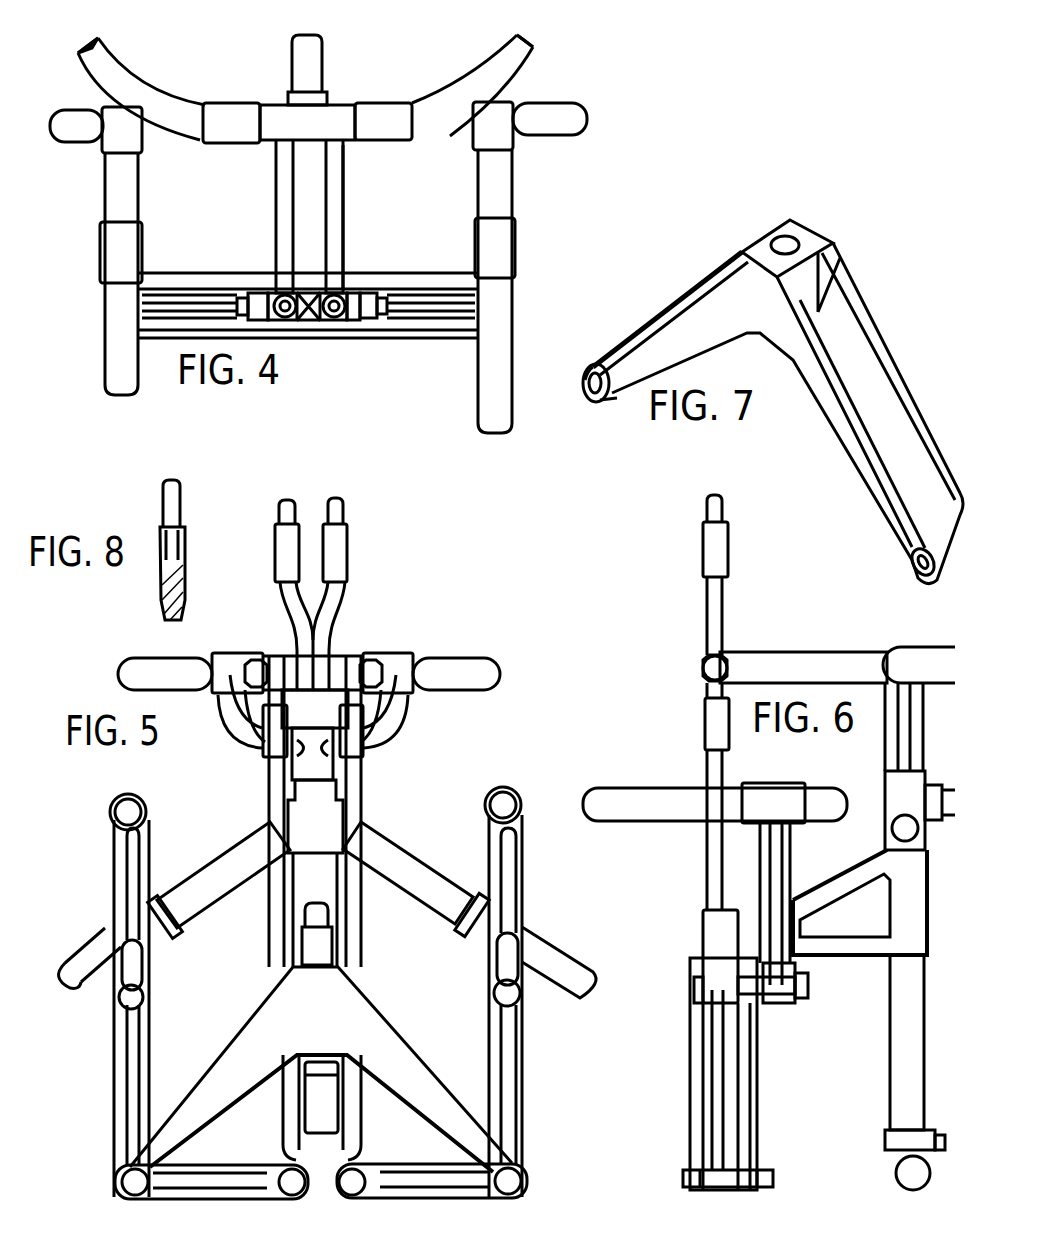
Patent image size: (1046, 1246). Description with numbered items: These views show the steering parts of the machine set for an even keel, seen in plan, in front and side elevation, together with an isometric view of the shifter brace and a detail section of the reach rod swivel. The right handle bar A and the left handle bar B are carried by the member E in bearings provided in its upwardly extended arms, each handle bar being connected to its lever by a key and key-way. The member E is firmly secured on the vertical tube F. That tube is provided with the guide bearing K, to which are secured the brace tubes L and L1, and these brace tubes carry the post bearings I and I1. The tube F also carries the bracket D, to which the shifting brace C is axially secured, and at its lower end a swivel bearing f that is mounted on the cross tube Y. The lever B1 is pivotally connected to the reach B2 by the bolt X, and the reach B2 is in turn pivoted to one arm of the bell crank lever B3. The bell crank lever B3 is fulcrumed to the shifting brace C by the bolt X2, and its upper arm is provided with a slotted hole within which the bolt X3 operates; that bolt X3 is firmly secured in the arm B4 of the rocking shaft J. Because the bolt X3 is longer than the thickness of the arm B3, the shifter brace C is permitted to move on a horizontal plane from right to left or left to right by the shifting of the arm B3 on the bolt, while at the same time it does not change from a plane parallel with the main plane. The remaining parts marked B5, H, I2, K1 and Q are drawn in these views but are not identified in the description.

In FIG. 4, the handle bar A is at (141, 89).
In FIG. 5, the handle bar A is at (165, 674).
In FIG. 4, the handle bar B is at (472, 85).
In FIG. 5, the handle bar B is at (456, 674).
In FIG. 6, the handle bar B is at (919, 665).
In FIG. 4, the lever B1 is at (335, 199).
In FIG. 5, the lever B1 is at (333, 662).
In FIG. 6, the lever B1 is at (803, 667).
In FIG. 5, the reach B2 is at (361, 786).
In FIG. 6, the reach B2 is at (722, 767).
In FIG. 4, the bell crank lever B3 is at (407, 315).
In FIG. 5, the bell crank lever B3 is at (522, 1063).
In FIG. 6, the bell crank lever B3 is at (716, 956).
In FIG. 4, the arm of the rocking shaft B4 is at (495, 248).
In FIG. 5, the arm of the rocking shaft B4 is at (522, 878).
In FIG. 6, the arm of the rocking shaft B4 is at (790, 850).
In FIG. 4, the bottom bar B5 is at (348, 320).
In FIG. 5, the bottom bar B5 is at (446, 1190).
In FIG. 4, the shifting brace C is at (432, 272).
In FIG. 7, the shifting brace C is at (773, 402).
In FIG. 5, the shifting brace C is at (321, 1069).
In FIG. 6, the shifting brace C is at (757, 1050).
In FIG. 4, the bracket D is at (309, 216).
In FIG. 5, the bracket D is at (315, 910).
In FIG. 6, the bracket D is at (860, 902).
In FIG. 4, the member E is at (307, 123).
In FIG. 5, the member E is at (395, 719).
In FIG. 6, the member E is at (923, 708).
In FIG. 5, the vertical tube F is at (321, 1097).
In FIG. 6, the vertical tube F is at (910, 1052).
In FIG. 6, the swivel bearing f is at (945, 1142).
In FIG. 5, the sleeve H is at (313, 640).
In FIG. 6, the sleeve H is at (716, 636).
In FIG. 4, the post bearing I is at (493, 126).
In FIG. 5, the post bearing I is at (472, 914).
In FIG. 5, the post bearing I1 is at (170, 926).
In FIG. 4, the coupling I2 is at (122, 130).
In FIG. 4, the rocking shaft J is at (495, 291).
In FIG. 5, the rocking shaft J is at (503, 805).
In FIG. 6, the rocking shaft J is at (715, 803).
In FIG. 4, the guide bearing K is at (328, 97).
In FIG. 5, the guide bearing K is at (315, 771).
In FIG. 6, the guide bearing K is at (920, 810).
In FIG. 4, the stem K1 is at (307, 63).
In FIG. 4, the brace tube L is at (550, 119).
In FIG. 5, the brace tube L is at (469, 910).
In FIG. 6, the brace tube L is at (905, 828).
In FIG. 4, the brace tube L1 is at (76, 126).
In FIG. 5, the brace tube L1 is at (174, 905).
In FIG. 4, the rod Q is at (322, 290).
In FIG. 5, the rod Q is at (343, 512).
In FIG. 6, the rod Q is at (722, 512).
In FIG. 4, the bolt X is at (377, 291).
In FIG. 5, the bolt X is at (385, 665).
In FIG. 6, the bolt X is at (703, 668).
In FIG. 6, the bolt X2 is at (683, 1178).
In FIG. 6, the bolt X3 is at (808, 985).
In FIG. 6, the cross tube Y is at (913, 1173).